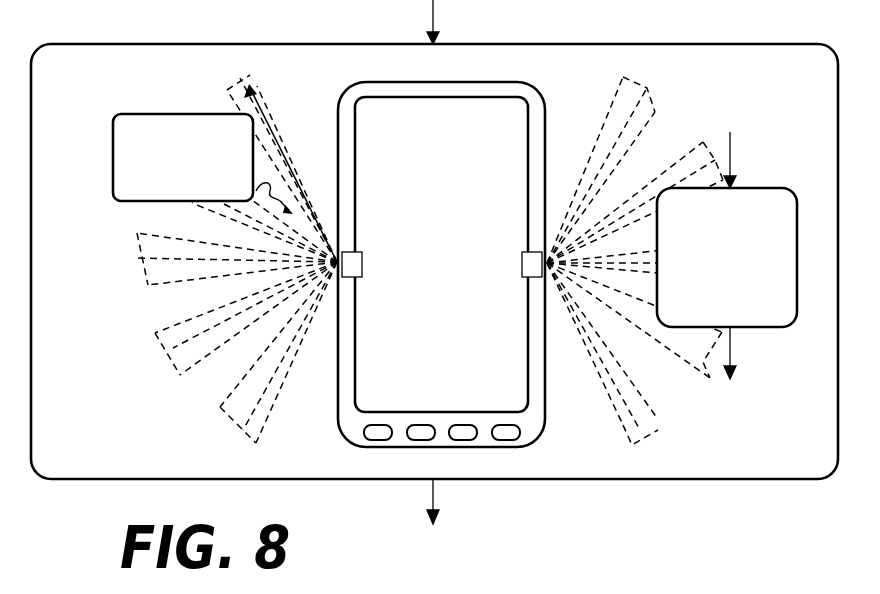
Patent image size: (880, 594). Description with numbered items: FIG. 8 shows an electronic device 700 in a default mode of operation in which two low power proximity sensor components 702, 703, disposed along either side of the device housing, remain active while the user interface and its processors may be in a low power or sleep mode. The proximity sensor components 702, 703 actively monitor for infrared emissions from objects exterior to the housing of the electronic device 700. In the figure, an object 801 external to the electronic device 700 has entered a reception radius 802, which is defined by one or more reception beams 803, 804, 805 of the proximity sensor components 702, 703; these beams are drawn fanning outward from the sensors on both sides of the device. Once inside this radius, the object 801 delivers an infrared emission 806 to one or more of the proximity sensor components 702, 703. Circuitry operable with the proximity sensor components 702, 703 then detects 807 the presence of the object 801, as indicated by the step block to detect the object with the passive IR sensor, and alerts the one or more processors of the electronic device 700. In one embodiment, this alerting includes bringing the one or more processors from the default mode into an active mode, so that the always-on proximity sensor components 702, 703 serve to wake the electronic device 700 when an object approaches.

The electronic device 700 is at (547, 132).
The proximity sensor component 702 is at (365, 263).
The proximity sensor component 703 is at (522, 264).
The object 801 is at (147, 135).
The reception radius 802 is at (262, 108).
The reception beam 803 is at (146, 268).
The reception beam 804 is at (172, 355).
The reception beam 805 is at (248, 380).
The infrared emission 806 is at (284, 186).
The detecting the presence of the object 807 is at (765, 223).